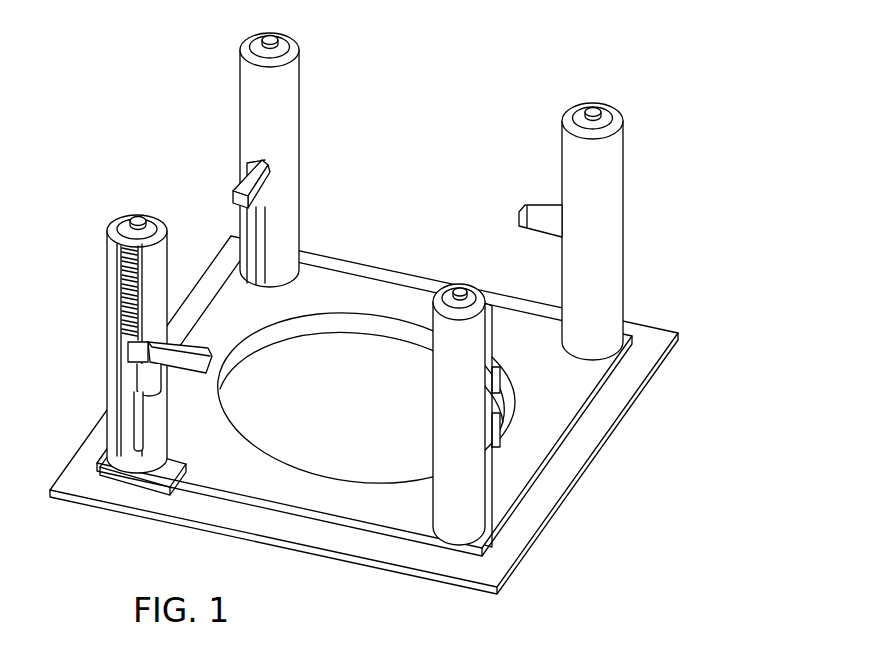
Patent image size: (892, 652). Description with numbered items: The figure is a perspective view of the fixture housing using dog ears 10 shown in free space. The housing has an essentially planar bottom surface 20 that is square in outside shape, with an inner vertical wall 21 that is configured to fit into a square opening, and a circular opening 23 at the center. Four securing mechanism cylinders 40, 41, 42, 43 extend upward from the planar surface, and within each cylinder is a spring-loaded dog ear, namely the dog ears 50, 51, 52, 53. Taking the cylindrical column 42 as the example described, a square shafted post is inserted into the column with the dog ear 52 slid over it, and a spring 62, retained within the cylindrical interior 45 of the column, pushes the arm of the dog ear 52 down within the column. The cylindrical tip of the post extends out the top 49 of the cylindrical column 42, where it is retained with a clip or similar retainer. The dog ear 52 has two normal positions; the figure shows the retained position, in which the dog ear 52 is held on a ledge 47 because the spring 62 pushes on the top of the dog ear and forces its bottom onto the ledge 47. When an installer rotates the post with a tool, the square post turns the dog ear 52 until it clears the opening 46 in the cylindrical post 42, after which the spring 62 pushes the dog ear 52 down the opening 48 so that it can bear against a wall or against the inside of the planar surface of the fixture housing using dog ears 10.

The fixture housing using dog ears 10 is at (742, 310).
The planar bottom surface 20 is at (638, 388).
The inner vertical wall 21 is at (212, 488).
The circular opening 23 is at (259, 453).
The securing mechanism cylinder 40 is at (623, 222).
The securing mechanism cylinder 41 is at (240, 114).
The cylindrical column 42 is at (107, 303).
The securing mechanism cylinder 43 is at (484, 490).
The cylindrical interior 45 is at (117, 277).
The opening in the cylindrical post 46 is at (128, 352).
The ledge 47 is at (140, 384).
The opening 48 is at (134, 421).
The top of the cylindrical column 49 is at (132, 215).
The dog ear 50 is at (518, 215).
The dog ear 51 is at (231, 190).
The dog ear 52 is at (185, 334).
The dog ear 53 is at (497, 385).
The spring 62 is at (126, 297).